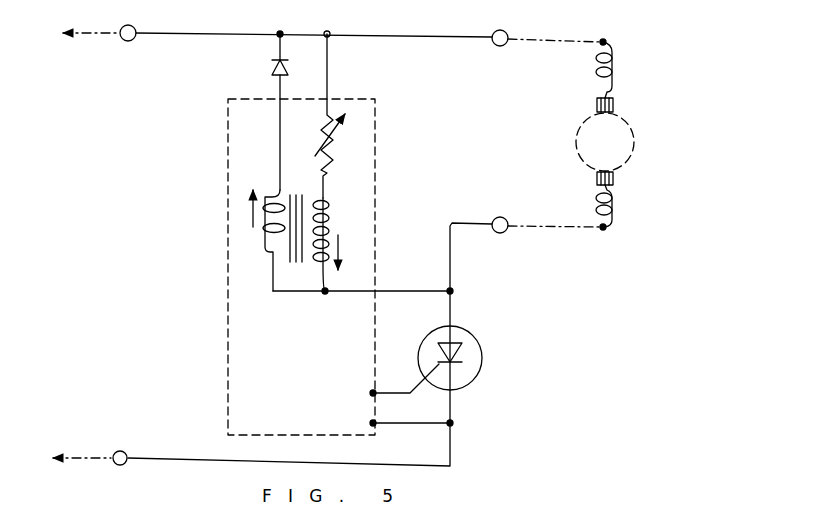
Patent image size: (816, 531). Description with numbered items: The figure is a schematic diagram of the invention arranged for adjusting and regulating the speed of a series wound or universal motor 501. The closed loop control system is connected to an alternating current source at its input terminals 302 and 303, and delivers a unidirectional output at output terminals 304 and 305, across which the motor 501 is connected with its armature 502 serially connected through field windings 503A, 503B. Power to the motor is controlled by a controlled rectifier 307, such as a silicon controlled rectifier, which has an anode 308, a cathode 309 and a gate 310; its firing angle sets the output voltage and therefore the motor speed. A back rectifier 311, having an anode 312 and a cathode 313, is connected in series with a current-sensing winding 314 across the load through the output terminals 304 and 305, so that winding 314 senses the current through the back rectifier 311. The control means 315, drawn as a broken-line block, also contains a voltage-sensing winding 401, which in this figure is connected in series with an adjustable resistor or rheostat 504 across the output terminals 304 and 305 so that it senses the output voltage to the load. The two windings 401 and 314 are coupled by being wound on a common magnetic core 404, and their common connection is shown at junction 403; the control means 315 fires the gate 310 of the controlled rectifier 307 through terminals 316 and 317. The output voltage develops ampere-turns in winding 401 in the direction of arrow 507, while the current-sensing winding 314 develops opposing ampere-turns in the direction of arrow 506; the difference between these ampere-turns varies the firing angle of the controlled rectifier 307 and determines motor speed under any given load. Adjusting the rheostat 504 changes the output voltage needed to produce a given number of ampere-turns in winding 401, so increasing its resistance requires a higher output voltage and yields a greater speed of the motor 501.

The input terminal 302 is at (131, 41).
The input terminal 303 is at (116, 451).
The output terminal 304 is at (508, 35).
The output terminal 305 is at (503, 233).
The controlled rectifier 307 is at (449, 353).
The anode 308 is at (466, 341).
The cathode 309 is at (462, 374).
The gate 310 is at (430, 376).
The back rectifier 311 is at (261, 110).
The anode 312 is at (285, 68).
The cathode 313 is at (275, 58).
The current-sensing winding 314 is at (263, 237).
The control means 315 is at (263, 128).
The gate terminal 316 is at (385, 395).
The cathode terminal 317 is at (390, 425).
The voltage-sensing winding 401 is at (326, 233).
The common junction lead 403 is at (324, 294).
The magnetic core 404 is at (300, 195).
The series wound or universal motor 501 is at (637, 134).
The armature 502 is at (618, 120).
The field winding 503A is at (612, 60).
The field winding 503B is at (612, 198).
The adjustable resistor or rheostat 504 is at (329, 152).
The arrow 506 is at (252, 196).
The arrow 507 is at (354, 262).